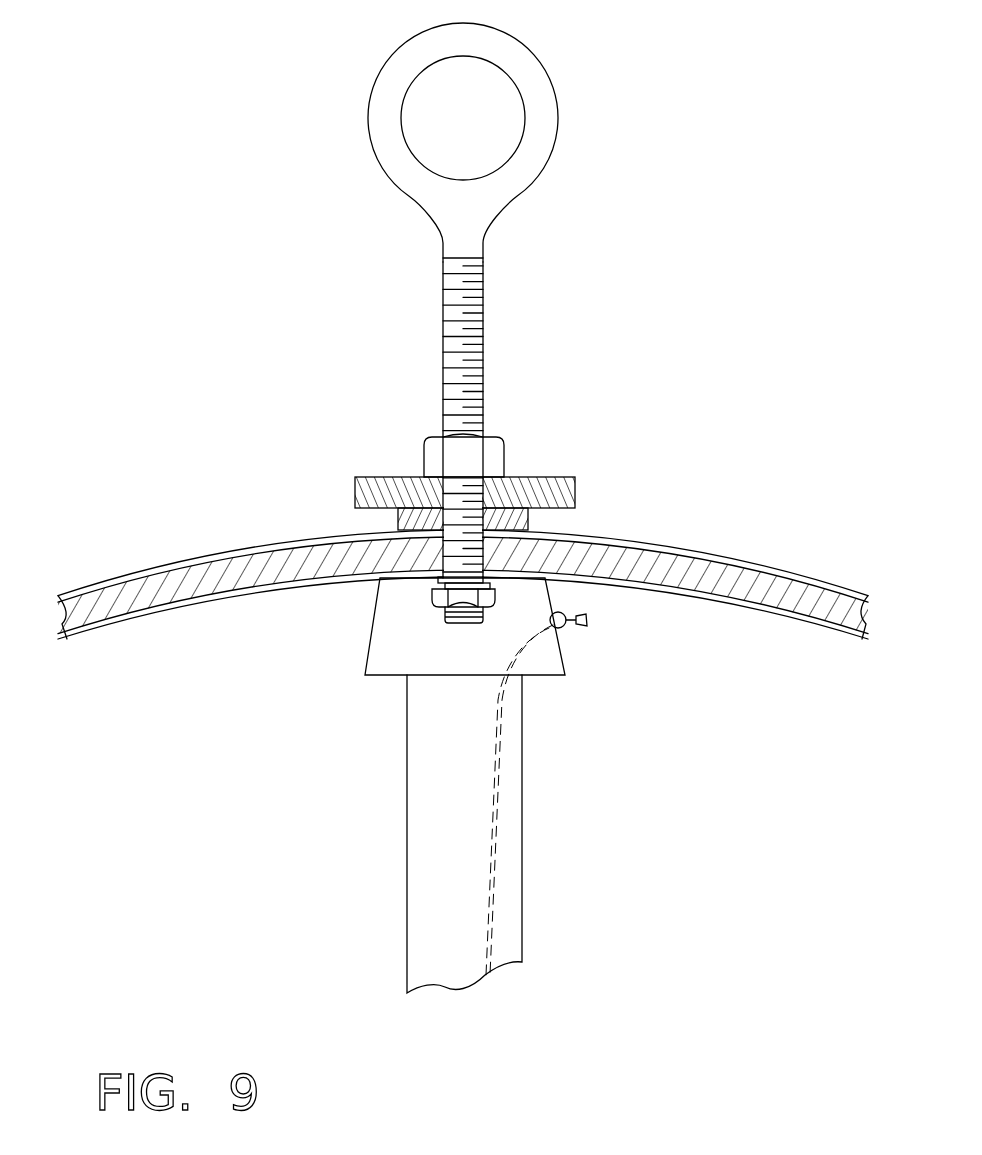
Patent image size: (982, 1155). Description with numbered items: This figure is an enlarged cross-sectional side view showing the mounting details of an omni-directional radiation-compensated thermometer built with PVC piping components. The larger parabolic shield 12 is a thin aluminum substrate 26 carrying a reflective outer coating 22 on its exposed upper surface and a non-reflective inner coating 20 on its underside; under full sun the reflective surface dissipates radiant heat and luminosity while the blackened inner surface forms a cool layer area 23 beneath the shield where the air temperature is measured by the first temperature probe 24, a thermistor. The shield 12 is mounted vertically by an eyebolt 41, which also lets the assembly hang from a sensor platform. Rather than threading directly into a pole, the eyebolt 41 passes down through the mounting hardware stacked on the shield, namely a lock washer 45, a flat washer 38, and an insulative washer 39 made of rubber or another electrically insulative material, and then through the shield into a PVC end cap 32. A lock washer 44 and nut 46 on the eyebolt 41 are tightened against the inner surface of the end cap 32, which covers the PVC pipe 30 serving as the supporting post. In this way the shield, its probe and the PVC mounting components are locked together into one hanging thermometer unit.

The upper shield 12 is at (740, 513).
The non-reflective inner coating 20 is at (752, 614).
The reflective outer coating 22 is at (710, 557).
The cool layer area 23 is at (135, 657).
The first temperature probe 24 is at (583, 627).
The substrate 26 is at (790, 597).
The PVC pipe 30 is at (481, 750).
The PVC end cap 32 is at (476, 665).
The flat washer 38 is at (553, 476).
The insulative washer 39 is at (398, 522).
The eyebolt 41 is at (547, 68).
The lock washer 44 is at (438, 583).
The lock washer 45 is at (505, 440).
The nut 46 is at (433, 600).